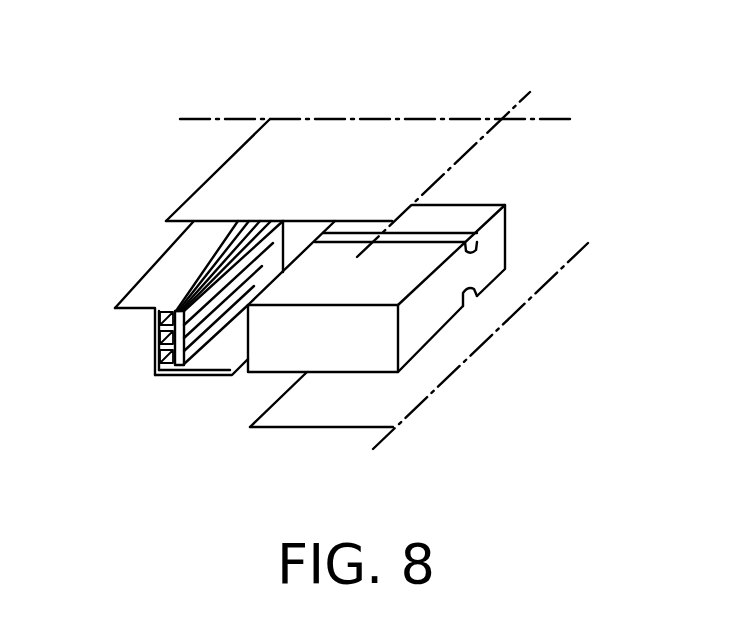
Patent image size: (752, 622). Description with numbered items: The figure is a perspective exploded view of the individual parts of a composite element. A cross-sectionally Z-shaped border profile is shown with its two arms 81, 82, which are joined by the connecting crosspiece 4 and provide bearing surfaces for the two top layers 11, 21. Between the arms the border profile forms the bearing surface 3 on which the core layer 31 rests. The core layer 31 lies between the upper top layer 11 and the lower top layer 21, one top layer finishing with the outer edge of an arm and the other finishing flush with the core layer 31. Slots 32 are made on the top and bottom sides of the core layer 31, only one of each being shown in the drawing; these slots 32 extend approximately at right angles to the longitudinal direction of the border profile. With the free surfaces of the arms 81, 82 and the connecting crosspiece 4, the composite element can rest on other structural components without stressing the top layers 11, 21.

The top layer 11 is at (357, 146).
The top layer 21 is at (366, 411).
The bearing surface 3 is at (190, 335).
The core layer 31 is at (500, 254).
The slots 32 is at (427, 233).
The connecting crosspiece 4 is at (153, 342).
The arm 81 is at (163, 281).
The arm 82 is at (182, 378).